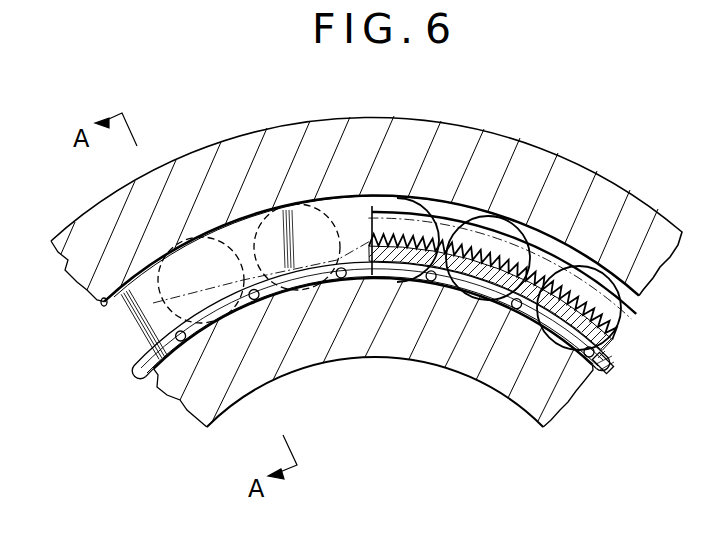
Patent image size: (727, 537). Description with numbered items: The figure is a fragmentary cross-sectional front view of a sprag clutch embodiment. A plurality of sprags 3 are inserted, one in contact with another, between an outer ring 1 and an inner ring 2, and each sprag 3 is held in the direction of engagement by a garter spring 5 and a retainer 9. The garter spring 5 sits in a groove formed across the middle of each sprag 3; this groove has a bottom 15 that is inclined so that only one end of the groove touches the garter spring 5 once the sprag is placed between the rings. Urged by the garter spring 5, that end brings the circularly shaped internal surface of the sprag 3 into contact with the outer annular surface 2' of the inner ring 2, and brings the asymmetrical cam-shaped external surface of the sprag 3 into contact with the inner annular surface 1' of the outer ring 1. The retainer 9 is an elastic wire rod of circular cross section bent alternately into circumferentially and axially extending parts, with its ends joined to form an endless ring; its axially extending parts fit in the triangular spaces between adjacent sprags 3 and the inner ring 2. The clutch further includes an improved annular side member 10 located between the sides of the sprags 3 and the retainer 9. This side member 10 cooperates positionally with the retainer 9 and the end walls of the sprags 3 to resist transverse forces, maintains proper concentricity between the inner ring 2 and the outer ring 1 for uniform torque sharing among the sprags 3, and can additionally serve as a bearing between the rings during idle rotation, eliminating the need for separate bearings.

The outer ring 1 is at (366, 193).
The inner ring 2 is at (374, 365).
The inner annular surface of the outer ring 1' is at (350, 264).
The outer annular surface of the inner ring 2' is at (368, 351).
The sprag 3 is at (583, 270).
The garter spring 5 is at (424, 395).
The retainer 9 is at (593, 368).
The annular side member 10 is at (104, 304).
The bottom of the groove 15 is at (470, 300).